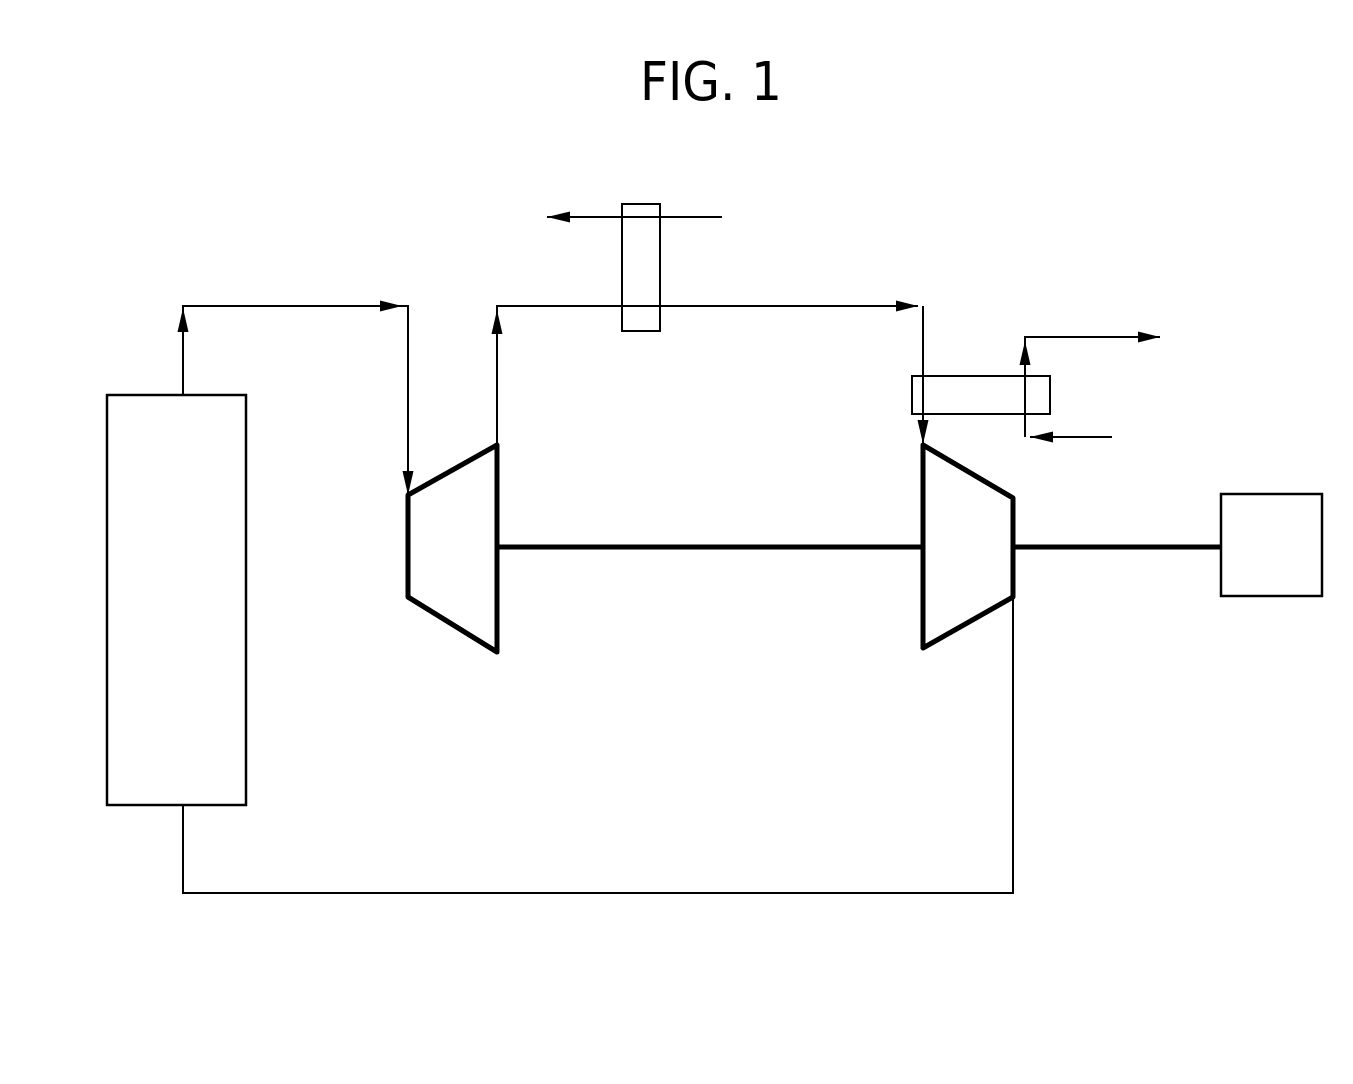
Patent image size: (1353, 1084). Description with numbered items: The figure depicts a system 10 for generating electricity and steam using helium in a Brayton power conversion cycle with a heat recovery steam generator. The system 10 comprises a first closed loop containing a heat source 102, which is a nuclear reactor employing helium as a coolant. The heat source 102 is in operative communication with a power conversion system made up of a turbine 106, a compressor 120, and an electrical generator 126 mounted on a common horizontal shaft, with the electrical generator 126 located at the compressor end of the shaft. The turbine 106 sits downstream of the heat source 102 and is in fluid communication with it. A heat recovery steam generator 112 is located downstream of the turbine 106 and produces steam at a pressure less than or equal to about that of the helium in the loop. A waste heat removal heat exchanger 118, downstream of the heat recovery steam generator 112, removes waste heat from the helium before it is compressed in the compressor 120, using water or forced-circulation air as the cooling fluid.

The system 10 is at (1152, 195).
The heat source 102 is at (246, 746).
The turbine 106 is at (445, 597).
The heat recovery steam generator 112 is at (641, 321).
The waste heat removal heat exchanger 118 is at (965, 376).
The compressor 120 is at (935, 585).
The electrical generator 126 is at (1234, 494).